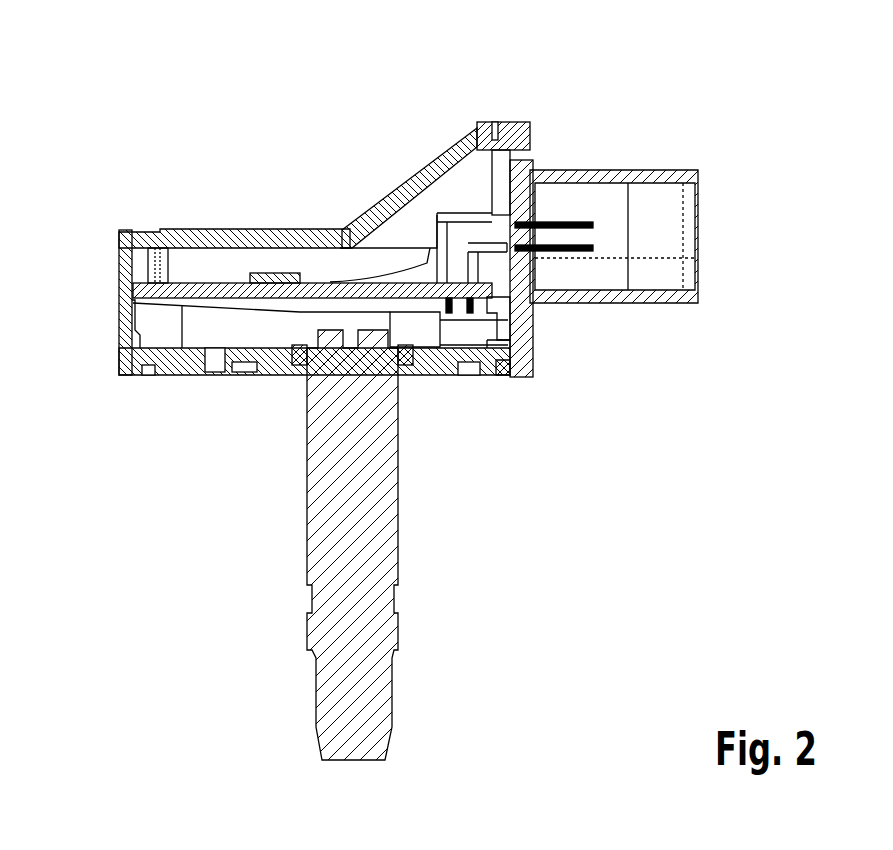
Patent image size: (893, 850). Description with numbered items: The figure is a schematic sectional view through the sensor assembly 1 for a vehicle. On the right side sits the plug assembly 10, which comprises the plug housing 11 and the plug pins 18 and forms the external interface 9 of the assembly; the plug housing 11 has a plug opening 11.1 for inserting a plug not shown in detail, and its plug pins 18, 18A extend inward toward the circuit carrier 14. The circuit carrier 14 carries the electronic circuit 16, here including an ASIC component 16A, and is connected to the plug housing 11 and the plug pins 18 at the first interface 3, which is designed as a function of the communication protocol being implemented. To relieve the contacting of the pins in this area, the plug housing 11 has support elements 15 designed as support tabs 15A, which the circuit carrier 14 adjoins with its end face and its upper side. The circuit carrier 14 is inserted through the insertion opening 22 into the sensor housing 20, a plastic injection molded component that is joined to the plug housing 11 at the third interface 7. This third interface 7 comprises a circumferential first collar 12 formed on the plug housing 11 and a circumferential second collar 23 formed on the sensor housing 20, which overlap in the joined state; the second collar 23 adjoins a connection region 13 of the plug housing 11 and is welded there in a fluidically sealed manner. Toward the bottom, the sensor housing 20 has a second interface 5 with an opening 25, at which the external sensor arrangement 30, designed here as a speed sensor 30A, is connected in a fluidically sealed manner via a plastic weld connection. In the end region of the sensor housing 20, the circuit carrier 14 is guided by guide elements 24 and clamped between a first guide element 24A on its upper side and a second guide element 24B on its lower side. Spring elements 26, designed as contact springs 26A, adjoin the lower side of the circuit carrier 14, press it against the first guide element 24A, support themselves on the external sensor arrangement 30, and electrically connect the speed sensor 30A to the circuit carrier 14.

The sensor assembly 1 is at (145, 125).
The first interface 3 is at (485, 210).
The second interface 5 is at (263, 402).
The third interface 7 is at (505, 118).
The external interface 9 is at (690, 282).
The plug assembly 10 is at (662, 179).
The plug housing 11 is at (630, 173).
The plug opening 11.1 is at (688, 238).
The first collar 12 is at (512, 375).
The connection region 13 is at (528, 368).
The circuit carrier 14 is at (135, 287).
The support element 15 is at (575, 319).
The support tab 15A is at (533, 300).
The electronic circuit 16 is at (206, 255).
The ASIC component 16A is at (262, 258).
The plug pin 18 is at (673, 221).
The contact pin end 18A is at (587, 224).
The sensor housing 20 is at (400, 148).
The insertion opening 22 is at (533, 172).
The second collar 23 is at (525, 350).
The guide element 24 is at (320, 304).
The first guide element 24A is at (365, 262).
The second guide element 24B is at (230, 320).
The opening 25 is at (282, 332).
The spring element 26 is at (398, 393).
The contact spring 26A is at (397, 370).
The external sensor arrangement 30 is at (454, 545).
The speed sensor 30A is at (432, 584).